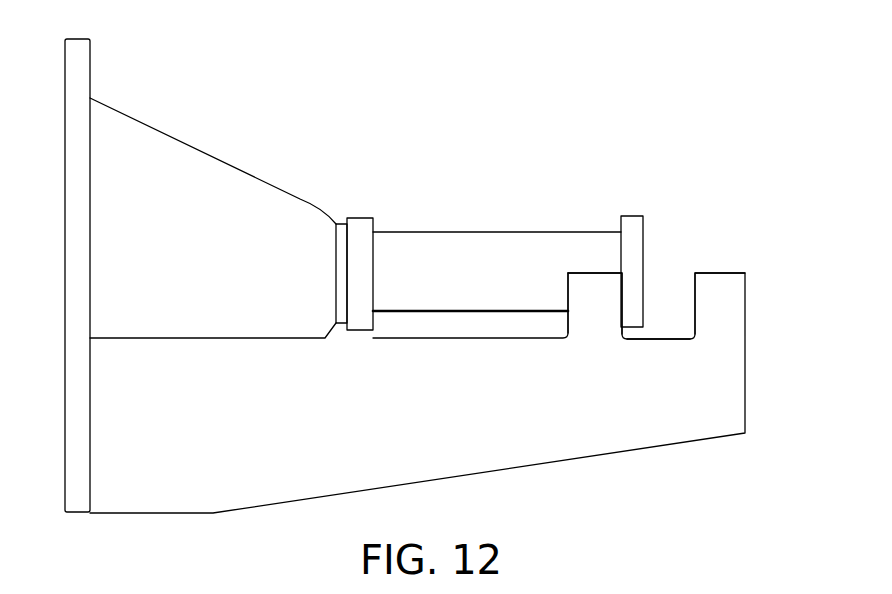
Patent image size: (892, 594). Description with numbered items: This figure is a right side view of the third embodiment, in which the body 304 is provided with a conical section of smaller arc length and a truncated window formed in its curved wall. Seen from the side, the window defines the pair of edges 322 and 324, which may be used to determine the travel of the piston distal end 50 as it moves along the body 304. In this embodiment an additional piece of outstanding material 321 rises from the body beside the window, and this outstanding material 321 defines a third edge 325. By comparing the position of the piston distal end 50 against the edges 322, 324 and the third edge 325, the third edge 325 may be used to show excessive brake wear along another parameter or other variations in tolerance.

The shaft body 304 is at (608, 466).
The outstanding material 321 is at (590, 272).
The piston distal end 50 is at (629, 226).
The edge 324 is at (625, 292).
The edge 322 is at (683, 288).
The third edge 325 is at (567, 292).